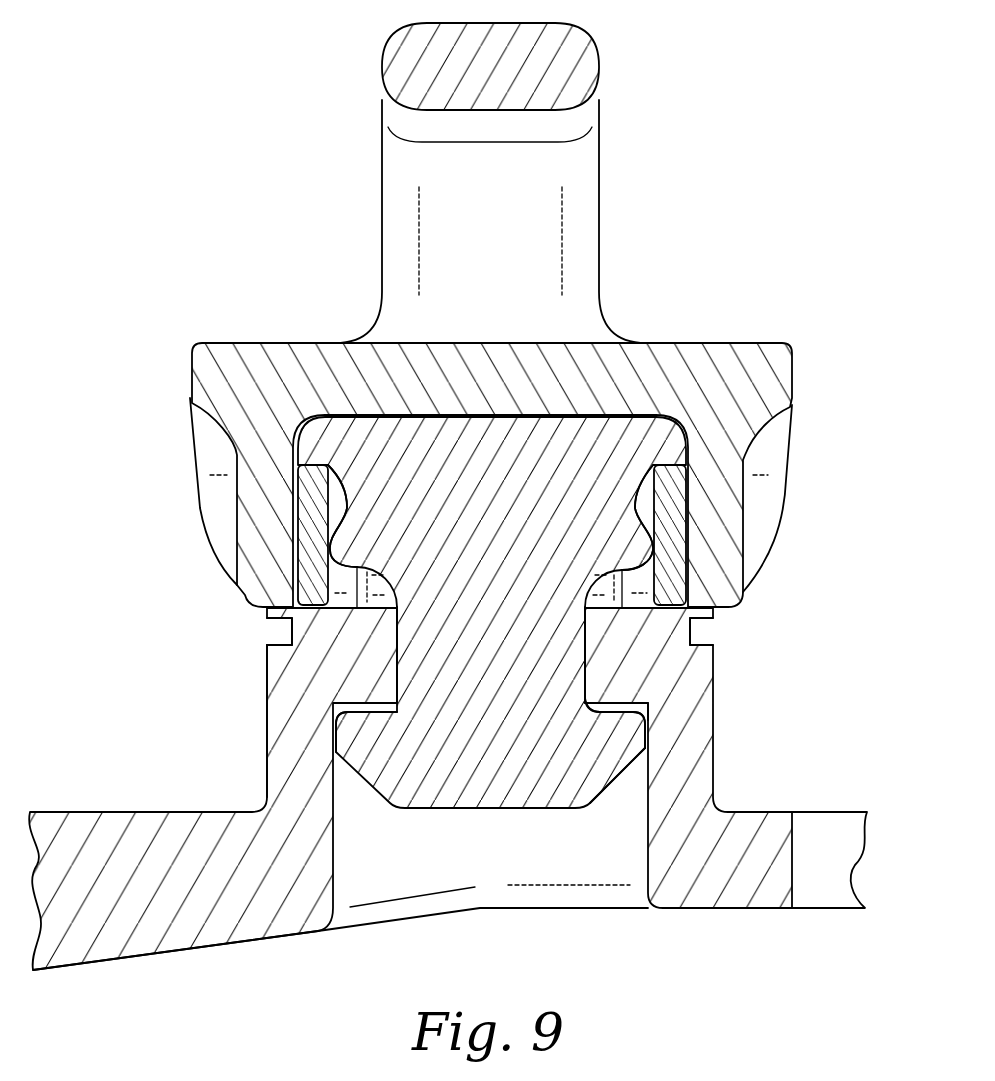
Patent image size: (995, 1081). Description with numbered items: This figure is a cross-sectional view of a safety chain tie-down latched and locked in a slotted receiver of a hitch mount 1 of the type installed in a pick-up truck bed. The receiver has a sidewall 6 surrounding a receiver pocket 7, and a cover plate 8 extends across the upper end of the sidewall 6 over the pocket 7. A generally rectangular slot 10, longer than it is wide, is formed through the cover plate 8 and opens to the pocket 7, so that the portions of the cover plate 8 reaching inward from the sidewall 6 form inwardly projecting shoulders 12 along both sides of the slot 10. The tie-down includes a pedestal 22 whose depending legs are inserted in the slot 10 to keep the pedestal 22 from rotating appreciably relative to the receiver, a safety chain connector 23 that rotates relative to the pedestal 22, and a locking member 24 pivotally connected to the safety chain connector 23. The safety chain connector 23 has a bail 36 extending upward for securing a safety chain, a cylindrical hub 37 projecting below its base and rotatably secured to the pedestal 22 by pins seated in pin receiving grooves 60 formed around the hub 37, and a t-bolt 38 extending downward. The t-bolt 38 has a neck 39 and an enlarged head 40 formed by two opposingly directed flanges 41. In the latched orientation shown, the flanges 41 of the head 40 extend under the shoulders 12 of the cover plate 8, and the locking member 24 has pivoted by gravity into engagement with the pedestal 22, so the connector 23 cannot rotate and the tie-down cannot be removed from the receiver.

The hitch mount 1 is at (232, 626).
The sidewall 6 is at (267, 748).
The receiver pocket 7 is at (333, 872).
The cover plate 8 is at (713, 632).
The slot 10 is at (399, 637).
The shoulders 12 is at (373, 682).
The pedestal 22 is at (305, 526).
The safety chain connector 23 is at (665, 440).
The locking member 24 is at (188, 335).
The bail 36 is at (604, 98).
The hub 37 is at (613, 502).
The t-bolt 38 is at (587, 810).
The neck 39 is at (620, 657).
The head 40 is at (620, 773).
The flanges 41 is at (360, 748).
The pin receiving grooves 60 is at (335, 500).